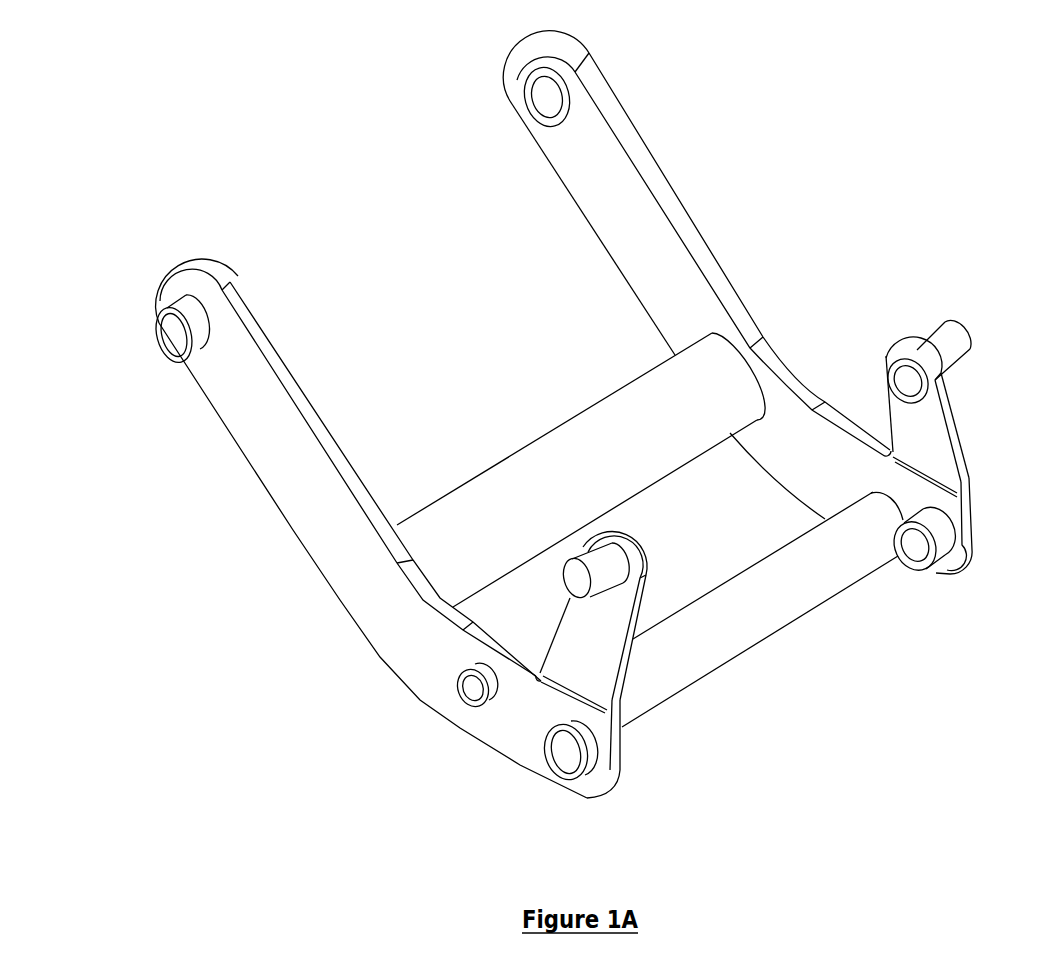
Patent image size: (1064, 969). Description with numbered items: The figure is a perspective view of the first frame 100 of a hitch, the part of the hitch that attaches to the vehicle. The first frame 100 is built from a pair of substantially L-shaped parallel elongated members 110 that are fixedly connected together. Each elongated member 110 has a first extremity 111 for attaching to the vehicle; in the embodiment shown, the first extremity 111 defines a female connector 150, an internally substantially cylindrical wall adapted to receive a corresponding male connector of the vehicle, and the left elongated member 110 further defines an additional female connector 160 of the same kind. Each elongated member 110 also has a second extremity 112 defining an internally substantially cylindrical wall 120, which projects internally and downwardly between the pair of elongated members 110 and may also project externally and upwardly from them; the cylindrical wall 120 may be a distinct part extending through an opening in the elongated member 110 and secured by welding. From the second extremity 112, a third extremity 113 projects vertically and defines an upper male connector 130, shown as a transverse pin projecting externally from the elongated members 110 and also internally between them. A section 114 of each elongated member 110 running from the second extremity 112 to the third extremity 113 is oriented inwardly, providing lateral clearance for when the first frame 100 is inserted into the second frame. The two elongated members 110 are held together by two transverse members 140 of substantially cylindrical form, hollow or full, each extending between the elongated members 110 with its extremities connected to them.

The first frame 100 is at (291, 64).
The elongated member 110 is at (649, 222).
The first extremity 111 is at (565, 47).
The second extremity 112 is at (970, 523).
The third extremity 113 is at (887, 358).
The section 114 is at (944, 449).
The cylindrical wall 120 is at (935, 532).
The upper male connector 130 is at (960, 340).
The transverse member 140 is at (599, 467).
The female connector 150 is at (523, 110).
The additional female connector 160 is at (458, 697).